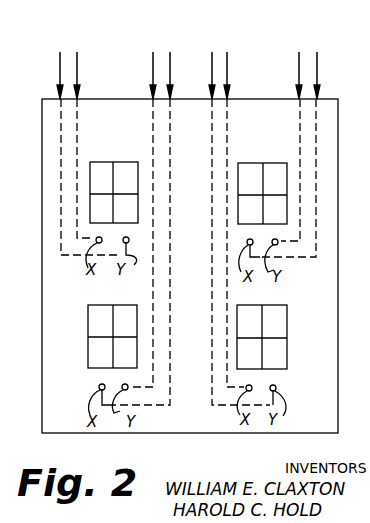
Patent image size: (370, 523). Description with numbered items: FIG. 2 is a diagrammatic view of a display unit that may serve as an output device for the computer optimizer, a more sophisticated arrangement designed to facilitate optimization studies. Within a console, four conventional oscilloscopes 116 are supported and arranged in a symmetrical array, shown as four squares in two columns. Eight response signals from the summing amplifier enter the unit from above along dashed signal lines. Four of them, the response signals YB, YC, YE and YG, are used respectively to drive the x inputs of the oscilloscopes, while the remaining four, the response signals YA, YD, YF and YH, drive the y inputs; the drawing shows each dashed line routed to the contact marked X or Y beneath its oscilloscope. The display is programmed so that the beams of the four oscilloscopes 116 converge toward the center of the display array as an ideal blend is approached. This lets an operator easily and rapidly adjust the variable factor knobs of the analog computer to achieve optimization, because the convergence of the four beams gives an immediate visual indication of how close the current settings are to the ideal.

The oscilloscope 116 is at (121, 162).
The response signal YA is at (60, 72).
The response signal YB is at (77, 72).
The response signal YC is at (170, 72).
The response signal YD is at (153, 72).
The response signal YE is at (227, 72).
The response signal YF is at (212, 67).
The response signal YG is at (317, 72).
The response signal YH is at (299, 72).